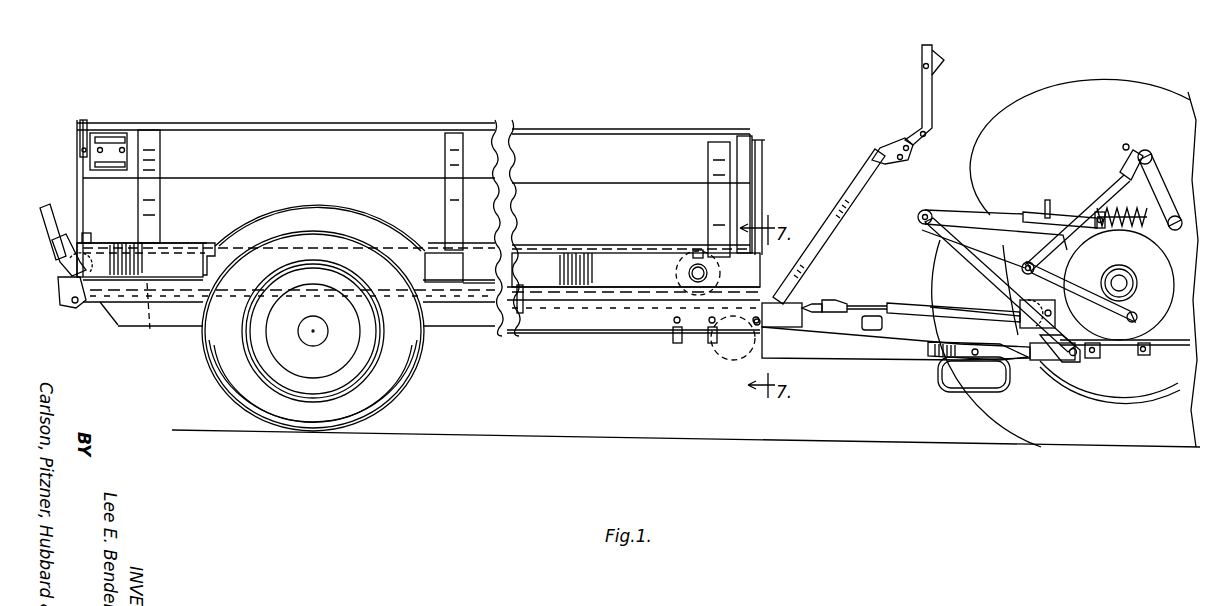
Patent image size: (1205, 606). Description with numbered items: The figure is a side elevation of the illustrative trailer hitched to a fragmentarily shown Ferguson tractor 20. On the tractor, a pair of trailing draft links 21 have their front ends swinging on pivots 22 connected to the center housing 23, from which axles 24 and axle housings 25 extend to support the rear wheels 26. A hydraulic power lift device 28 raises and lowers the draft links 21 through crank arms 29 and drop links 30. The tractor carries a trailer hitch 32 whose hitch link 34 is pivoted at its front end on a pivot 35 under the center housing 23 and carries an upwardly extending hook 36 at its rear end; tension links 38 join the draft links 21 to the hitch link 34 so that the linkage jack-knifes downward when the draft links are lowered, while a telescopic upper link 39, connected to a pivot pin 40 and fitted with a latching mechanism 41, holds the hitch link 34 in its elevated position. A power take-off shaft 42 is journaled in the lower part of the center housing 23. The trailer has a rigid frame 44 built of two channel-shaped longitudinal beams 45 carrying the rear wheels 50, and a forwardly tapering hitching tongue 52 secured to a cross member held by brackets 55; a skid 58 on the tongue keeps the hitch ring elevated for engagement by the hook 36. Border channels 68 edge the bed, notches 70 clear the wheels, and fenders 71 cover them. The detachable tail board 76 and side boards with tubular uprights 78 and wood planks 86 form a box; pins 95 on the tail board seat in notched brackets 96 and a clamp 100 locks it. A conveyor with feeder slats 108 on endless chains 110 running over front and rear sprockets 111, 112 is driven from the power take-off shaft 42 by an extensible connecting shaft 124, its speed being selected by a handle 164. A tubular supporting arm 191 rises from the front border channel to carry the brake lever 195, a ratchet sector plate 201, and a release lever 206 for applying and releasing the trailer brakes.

The tractor 20 is at (1136, 94).
The draft links 21 is at (1085, 298).
The pivots 22 is at (1138, 315).
The center housing 23 is at (1145, 333).
The axles 24 is at (1128, 280).
The axle housings 25 is at (1134, 284).
The rear wheels 26 is at (950, 206).
The hydraulic power lift device 28 is at (1165, 167).
The crank arms 29 is at (1168, 200).
The drop links 30 is at (1108, 208).
The trailer hitch 32 is at (1060, 370).
The hitch link 34 is at (1112, 377).
The pivot 35 is at (1145, 348).
The hook 36 is at (1050, 362).
The tension links 38 is at (990, 292).
The telescopic upper link 39 is at (1000, 212).
The pivot pin 40 is at (1103, 229).
The latching mechanism 41 is at (1044, 204).
The power take-off shaft 42 is at (1055, 307).
The frame 44 is at (455, 335).
The beams 45 is at (596, 332).
The rear wheels 50 is at (288, 434).
The hitching tongue 52 is at (903, 354).
The brackets 55 is at (722, 346).
The skid 58 is at (978, 379).
The border channels 68 is at (172, 255).
The notches 70 is at (218, 244).
The fenders 71 is at (388, 228).
The tail board 76 is at (72, 155).
The uprights 78 is at (155, 175).
The wood planks 86 is at (752, 205).
The pins 95 is at (85, 122).
The brackets 96 is at (112, 148).
The clamp 100 is at (97, 229).
The feeder slats 108 is at (672, 248).
The conveyor chains 110 is at (135, 315).
The front sprockets 111 is at (688, 274).
The rear sprockets 112 is at (56, 252).
The connecting shaft 124 is at (912, 308).
The handle 164 is at (46, 205).
The supporting arm 191 is at (832, 240).
The brake lever 195 is at (930, 128).
The ratchet sector plate 201 is at (902, 133).
The release lever 206 is at (944, 58).